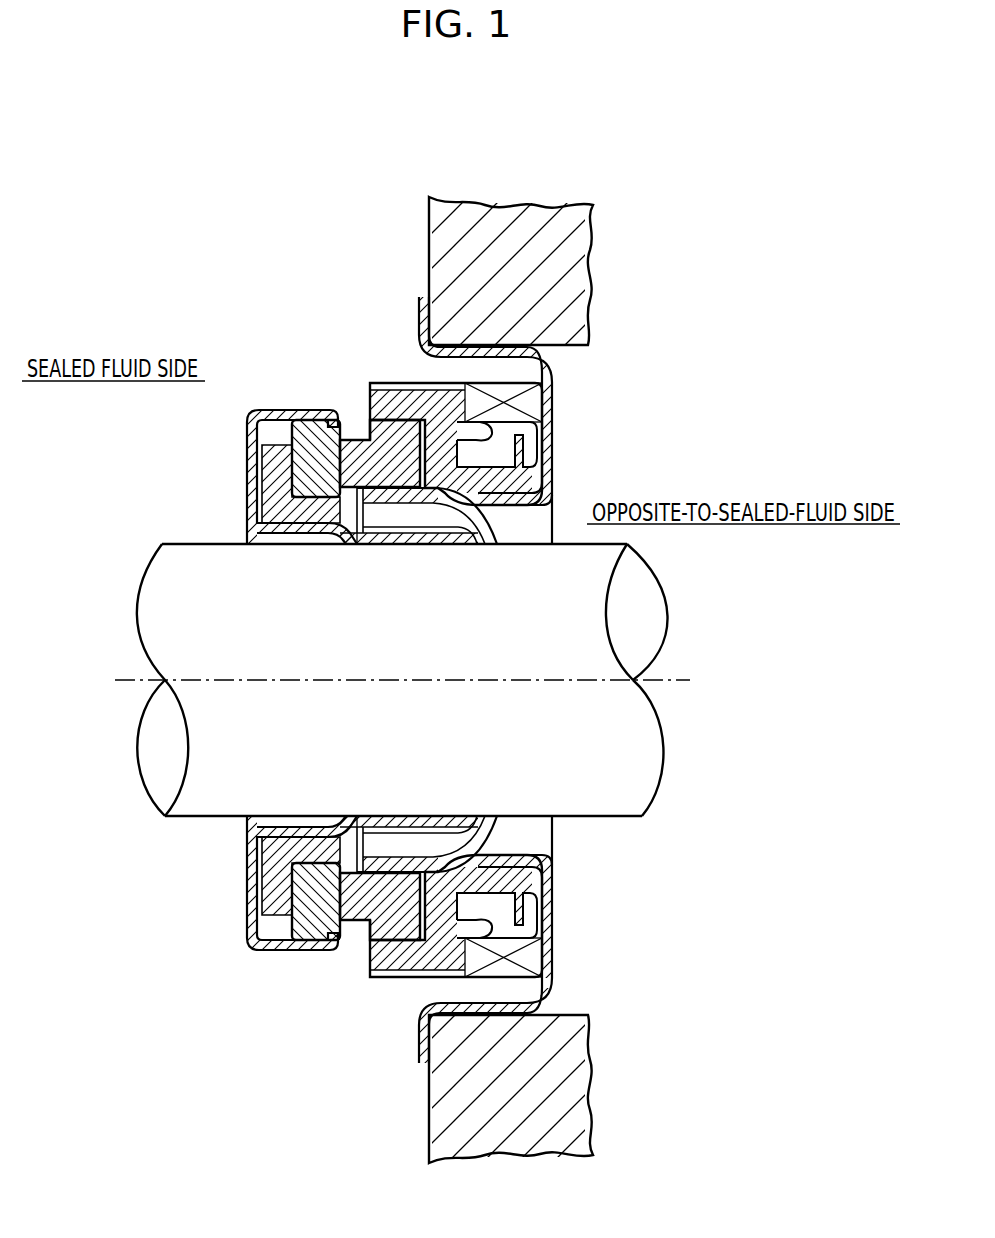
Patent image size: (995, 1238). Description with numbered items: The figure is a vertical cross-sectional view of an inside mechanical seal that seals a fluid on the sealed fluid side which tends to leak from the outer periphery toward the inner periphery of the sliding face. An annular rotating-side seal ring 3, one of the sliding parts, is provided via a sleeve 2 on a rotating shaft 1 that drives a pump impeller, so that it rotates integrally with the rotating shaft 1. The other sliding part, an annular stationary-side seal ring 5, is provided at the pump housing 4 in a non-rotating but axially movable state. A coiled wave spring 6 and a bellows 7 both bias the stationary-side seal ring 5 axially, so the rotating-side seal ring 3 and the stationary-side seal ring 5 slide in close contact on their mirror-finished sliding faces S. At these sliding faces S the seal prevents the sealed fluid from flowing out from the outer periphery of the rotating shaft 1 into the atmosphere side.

The rotating shaft 1 is at (300, 648).
The sleeve 2 is at (250, 478).
The rotating-side seal ring 3 is at (288, 412).
The pump housing 4 is at (500, 218).
The stationary-side seal ring 5 is at (357, 420).
The coiled wave spring 6 is at (540, 405).
The bellows 7 is at (419, 405).
The sliding faces S is at (358, 533).